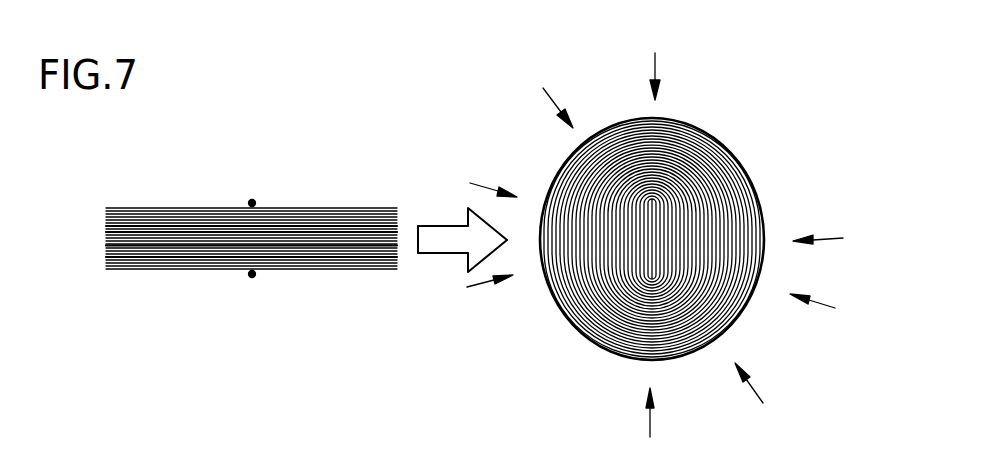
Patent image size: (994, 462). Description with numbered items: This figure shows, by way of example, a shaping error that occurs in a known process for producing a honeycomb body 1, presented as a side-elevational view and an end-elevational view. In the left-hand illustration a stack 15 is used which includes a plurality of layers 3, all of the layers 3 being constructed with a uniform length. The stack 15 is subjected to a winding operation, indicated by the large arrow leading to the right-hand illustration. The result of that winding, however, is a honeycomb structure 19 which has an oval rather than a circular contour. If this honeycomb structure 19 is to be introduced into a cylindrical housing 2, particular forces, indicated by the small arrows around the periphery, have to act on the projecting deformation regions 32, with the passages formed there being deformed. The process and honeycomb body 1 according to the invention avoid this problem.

The rolled electrode body 1 is at (765, 110).
The cylindrical housing 2 is at (564, 306).
The layers 3 is at (106, 255).
The stack 15 is at (228, 323).
The honeycomb structure 19 is at (683, 190).
The deformation regions 32 is at (595, 125).